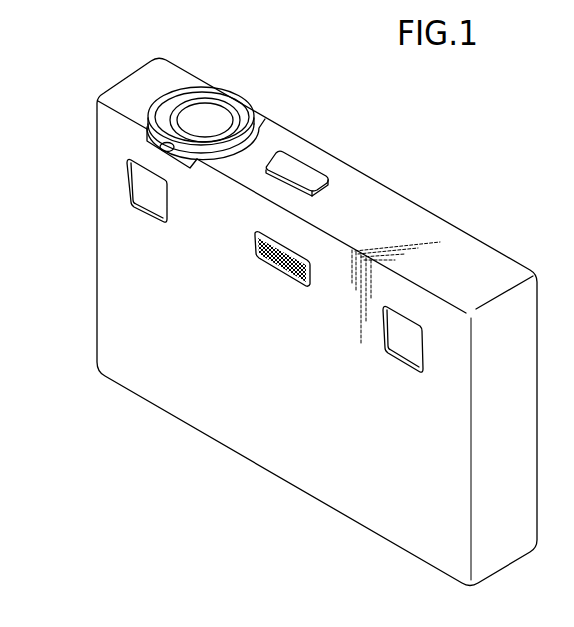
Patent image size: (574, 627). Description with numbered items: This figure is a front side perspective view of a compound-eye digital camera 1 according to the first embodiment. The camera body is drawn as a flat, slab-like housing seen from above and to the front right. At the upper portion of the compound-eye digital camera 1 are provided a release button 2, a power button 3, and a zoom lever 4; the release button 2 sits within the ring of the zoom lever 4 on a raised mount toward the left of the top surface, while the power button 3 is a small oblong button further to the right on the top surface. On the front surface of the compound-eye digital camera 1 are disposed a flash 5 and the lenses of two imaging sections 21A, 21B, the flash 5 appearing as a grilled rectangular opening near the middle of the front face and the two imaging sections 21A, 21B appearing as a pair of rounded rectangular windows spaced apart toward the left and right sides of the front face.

The compound-eye digital camera 1 is at (458, 250).
The release button 2 is at (203, 110).
The power button 3 is at (297, 170).
The zoom lever 4 is at (167, 95).
The flash 5 is at (257, 258).
The imaging section 21A is at (398, 332).
The imaging section 21B is at (141, 185).